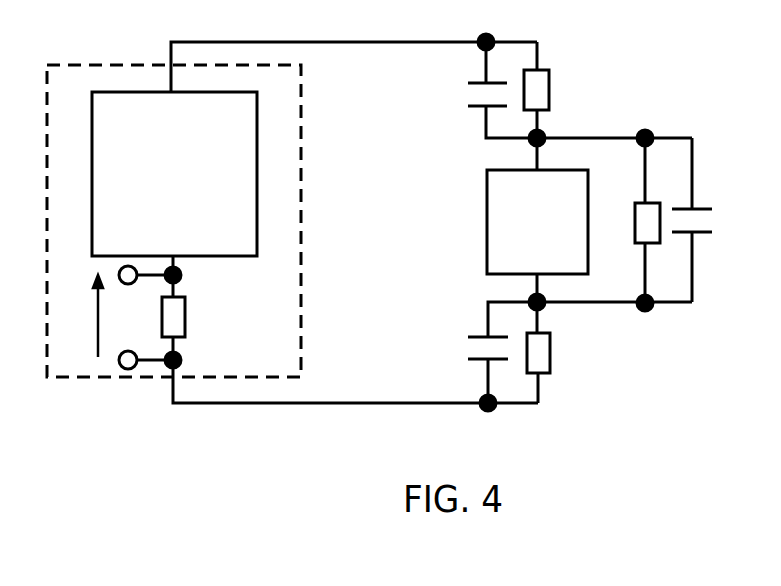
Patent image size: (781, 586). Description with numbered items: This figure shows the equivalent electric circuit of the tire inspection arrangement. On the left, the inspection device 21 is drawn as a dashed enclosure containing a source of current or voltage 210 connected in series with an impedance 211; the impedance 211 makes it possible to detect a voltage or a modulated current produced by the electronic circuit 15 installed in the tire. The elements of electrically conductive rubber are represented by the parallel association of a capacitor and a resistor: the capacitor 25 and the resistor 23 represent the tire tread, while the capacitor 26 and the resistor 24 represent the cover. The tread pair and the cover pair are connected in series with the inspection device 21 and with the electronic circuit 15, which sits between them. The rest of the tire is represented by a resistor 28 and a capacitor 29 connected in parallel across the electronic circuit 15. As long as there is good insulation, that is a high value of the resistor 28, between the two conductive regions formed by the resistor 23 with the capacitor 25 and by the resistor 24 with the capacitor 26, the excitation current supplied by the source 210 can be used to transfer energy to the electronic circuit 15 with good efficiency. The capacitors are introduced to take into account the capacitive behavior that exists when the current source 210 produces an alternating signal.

The inspection device 21 is at (122, 392).
The source of current or voltage 210 is at (274, 178).
The impedance 211 is at (202, 317).
The electronic circuit 15 is at (472, 220).
The resistor 23 is at (566, 88).
The resistor 24 is at (569, 352).
The capacitor 25 is at (470, 120).
The capacitor 26 is at (474, 323).
The resistor 28 is at (625, 210).
The capacitor 29 is at (703, 198).